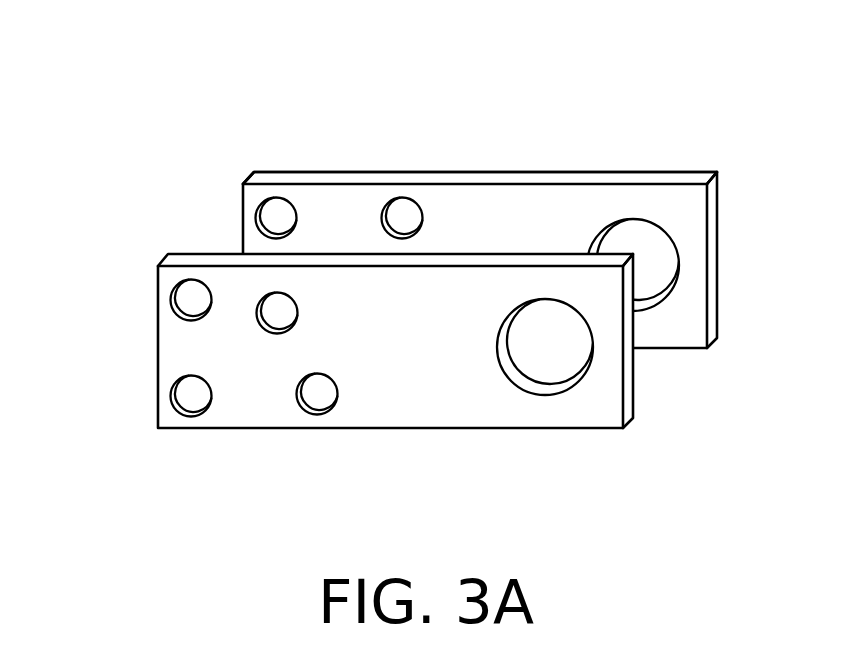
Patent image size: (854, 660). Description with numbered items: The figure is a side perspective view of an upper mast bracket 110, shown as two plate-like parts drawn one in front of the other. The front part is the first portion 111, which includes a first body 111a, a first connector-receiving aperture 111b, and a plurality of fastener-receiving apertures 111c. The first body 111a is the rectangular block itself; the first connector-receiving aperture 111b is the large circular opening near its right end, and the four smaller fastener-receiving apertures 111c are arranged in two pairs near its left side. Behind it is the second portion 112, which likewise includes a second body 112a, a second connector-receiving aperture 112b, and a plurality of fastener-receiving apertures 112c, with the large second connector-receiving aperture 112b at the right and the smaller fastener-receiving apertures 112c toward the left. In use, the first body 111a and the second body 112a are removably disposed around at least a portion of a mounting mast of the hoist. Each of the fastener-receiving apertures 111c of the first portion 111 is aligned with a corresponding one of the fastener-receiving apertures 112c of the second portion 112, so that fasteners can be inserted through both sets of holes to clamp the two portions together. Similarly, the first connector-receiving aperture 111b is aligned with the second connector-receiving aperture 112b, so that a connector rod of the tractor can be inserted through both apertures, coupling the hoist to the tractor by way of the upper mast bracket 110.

The upper mast bracket 110 is at (232, 62).
The first portion 111 is at (138, 250).
The first body 111a is at (600, 429).
The first connector-receiving aperture 111b is at (545, 357).
The fastener-receiving apertures 111c is at (283, 313).
The second portion 112 is at (222, 170).
The second body 112a is at (716, 173).
The second connector-receiving aperture 112b is at (633, 265).
The fastener-receiving apertures 112c is at (339, 218).